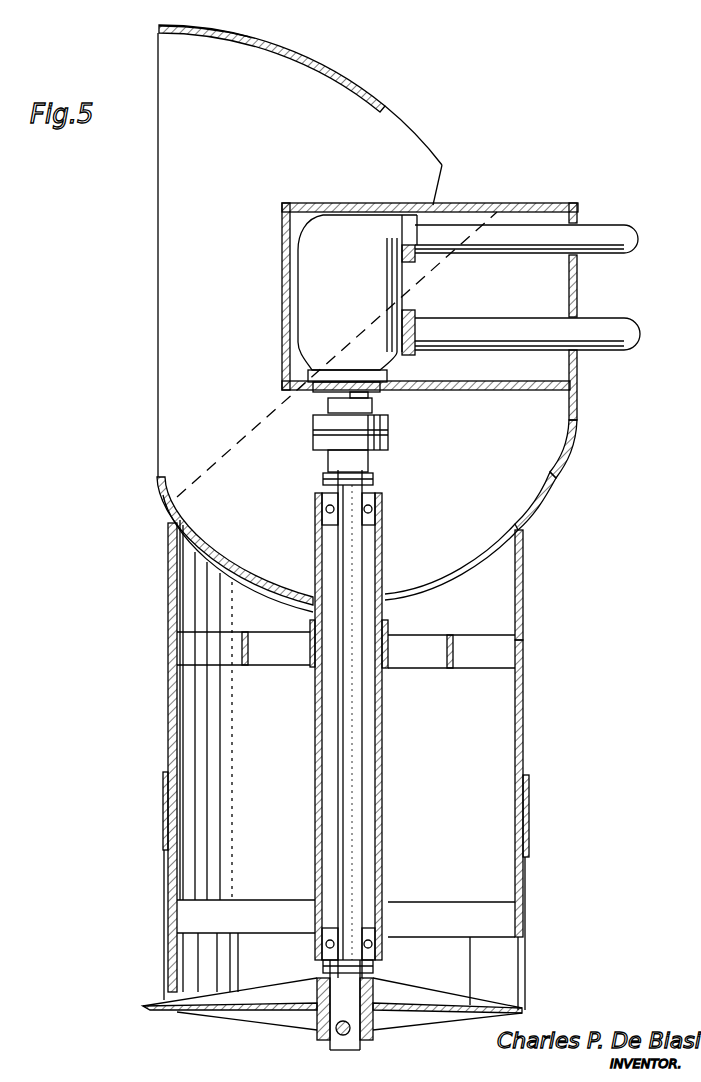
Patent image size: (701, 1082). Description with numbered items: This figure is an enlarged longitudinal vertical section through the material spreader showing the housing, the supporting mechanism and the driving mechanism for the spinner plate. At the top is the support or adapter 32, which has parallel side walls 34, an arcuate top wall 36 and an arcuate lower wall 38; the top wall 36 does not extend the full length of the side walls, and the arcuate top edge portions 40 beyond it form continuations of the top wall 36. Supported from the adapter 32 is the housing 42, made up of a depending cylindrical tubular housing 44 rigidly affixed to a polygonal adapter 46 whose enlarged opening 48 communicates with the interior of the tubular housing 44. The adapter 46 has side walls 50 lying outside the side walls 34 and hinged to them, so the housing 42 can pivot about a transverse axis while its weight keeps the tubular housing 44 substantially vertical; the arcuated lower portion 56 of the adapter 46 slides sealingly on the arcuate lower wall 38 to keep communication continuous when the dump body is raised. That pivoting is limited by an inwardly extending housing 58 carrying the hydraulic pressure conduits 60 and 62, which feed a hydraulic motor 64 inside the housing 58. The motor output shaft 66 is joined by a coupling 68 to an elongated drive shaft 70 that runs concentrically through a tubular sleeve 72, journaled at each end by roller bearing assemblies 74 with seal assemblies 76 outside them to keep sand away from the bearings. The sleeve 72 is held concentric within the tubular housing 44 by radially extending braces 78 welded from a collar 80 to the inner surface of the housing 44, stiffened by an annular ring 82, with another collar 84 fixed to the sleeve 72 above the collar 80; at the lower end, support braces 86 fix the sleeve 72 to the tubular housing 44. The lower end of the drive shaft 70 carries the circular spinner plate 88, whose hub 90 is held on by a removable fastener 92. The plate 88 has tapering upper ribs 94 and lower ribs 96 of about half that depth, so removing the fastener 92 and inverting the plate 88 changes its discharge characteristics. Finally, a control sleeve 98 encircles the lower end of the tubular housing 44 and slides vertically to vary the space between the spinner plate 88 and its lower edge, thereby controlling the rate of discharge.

The support or adapter 32 is at (337, 60).
The side walls 34 is at (280, 58).
The arcuate top wall 36 is at (240, 28).
The arcuate lower wall 38 is at (242, 568).
The arcuate top edge portions 40 is at (418, 137).
The housing 42 is at (537, 527).
The depending cylindrical tubular member or housing 44 is at (522, 682).
The polygonal adapter 46 is at (578, 387).
The enlarged opening 48 is at (512, 530).
The side walls 50 is at (552, 427).
The arcuated lower portion 56 is at (553, 485).
The inwardly extending housing 58 is at (487, 220).
The hydraulic pressure conduit 60 is at (530, 248).
The hydraulic pressure conduit 62 is at (520, 325).
The hydraulic motor 64 is at (313, 258).
The output shaft 66 is at (372, 402).
The coupling 68 is at (387, 438).
The drive shaft 70 is at (352, 762).
The tubular sleeve or housing 72 is at (385, 565).
The roller bearing assembly 74 is at (383, 512).
The seal assembly 76 is at (373, 498).
The radially extending braces 78 is at (430, 648).
The collar 80 is at (388, 668).
The annular ring 82 is at (452, 670).
The collar 84 is at (388, 628).
The support braces 86 is at (418, 912).
The spinner plate 88 is at (150, 1012).
The hub 90 is at (322, 1042).
The removable fastener 92 is at (347, 1034).
The radially extending ribs 94 is at (272, 998).
The radially extending ribs 96 is at (297, 1020).
The control sleeve 98 is at (529, 812).